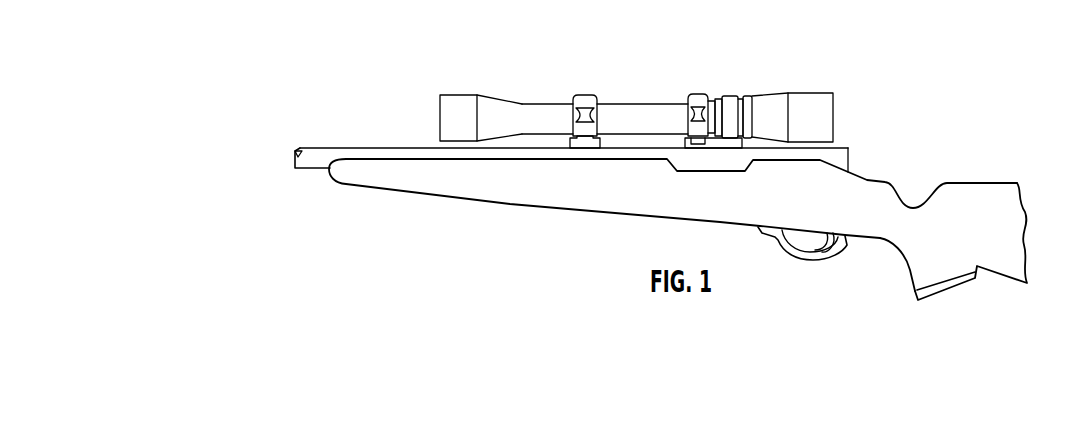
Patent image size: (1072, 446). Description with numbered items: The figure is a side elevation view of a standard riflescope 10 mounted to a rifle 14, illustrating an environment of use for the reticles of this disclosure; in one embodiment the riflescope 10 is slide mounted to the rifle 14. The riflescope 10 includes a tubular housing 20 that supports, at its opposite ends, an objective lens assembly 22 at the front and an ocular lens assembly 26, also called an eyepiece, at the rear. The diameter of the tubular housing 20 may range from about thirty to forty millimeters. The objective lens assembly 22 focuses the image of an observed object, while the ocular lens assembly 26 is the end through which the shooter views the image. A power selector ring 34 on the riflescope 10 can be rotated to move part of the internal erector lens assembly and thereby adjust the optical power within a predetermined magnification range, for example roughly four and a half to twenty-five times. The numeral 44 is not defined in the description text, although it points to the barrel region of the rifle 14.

The riflescope 10 is at (527, 85).
The rifle 14 is at (893, 165).
The tubular housing 20 is at (628, 103).
The objective lens assembly 22 is at (420, 106).
The ocular lens assembly 26 is at (853, 110).
The power selector ring 34 is at (723, 98).
The barrel 44 is at (317, 168).